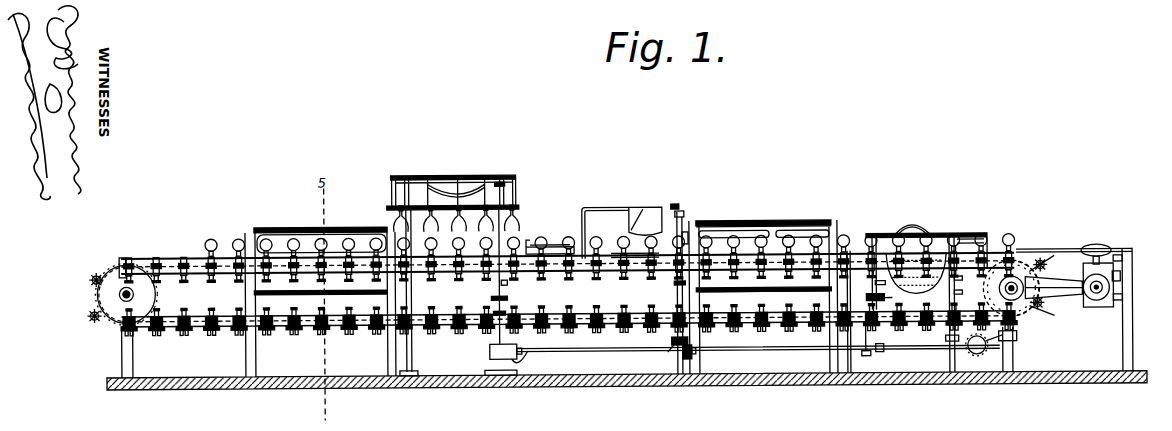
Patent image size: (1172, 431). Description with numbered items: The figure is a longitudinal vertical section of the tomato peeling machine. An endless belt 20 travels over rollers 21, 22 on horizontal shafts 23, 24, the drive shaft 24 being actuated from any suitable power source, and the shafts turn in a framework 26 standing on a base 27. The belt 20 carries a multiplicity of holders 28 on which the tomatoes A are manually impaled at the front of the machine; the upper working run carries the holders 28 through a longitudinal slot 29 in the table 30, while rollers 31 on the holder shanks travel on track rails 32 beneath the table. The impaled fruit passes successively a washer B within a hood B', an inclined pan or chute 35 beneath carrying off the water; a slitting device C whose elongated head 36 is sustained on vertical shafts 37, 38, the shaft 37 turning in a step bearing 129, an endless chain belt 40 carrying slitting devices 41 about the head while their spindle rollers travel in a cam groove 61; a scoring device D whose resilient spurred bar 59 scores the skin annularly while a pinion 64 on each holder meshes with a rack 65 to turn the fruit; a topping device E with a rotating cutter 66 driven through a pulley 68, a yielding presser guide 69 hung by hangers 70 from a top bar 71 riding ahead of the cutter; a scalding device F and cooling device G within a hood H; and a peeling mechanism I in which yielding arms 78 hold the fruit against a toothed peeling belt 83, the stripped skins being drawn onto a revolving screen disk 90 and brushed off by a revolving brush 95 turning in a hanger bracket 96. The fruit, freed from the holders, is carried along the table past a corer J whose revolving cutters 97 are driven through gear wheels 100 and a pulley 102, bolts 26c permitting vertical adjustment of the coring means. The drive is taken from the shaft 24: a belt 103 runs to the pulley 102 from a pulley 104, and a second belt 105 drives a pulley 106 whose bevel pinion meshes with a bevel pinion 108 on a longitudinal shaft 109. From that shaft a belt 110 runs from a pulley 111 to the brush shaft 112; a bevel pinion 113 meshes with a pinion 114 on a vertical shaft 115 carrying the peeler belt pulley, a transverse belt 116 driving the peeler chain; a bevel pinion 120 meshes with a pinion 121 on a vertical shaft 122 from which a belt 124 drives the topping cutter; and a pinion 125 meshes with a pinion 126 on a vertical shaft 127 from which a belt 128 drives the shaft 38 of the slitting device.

The endless belt 20 is at (198, 331).
The roller 21 is at (152, 299).
The roller 22 is at (996, 302).
The horizontal shaft 23 is at (126, 302).
The drive shaft 24 is at (1030, 294).
The framework 26 is at (122, 359).
The bolts 26c is at (1124, 264).
The base 27 is at (213, 391).
The holders 28 is at (158, 255).
The longitudinal slot 29 is at (138, 258).
The table 30 is at (1126, 255).
The rollers 31 is at (98, 276).
The track rails 32 is at (227, 276).
The inclined pan or chute 35 is at (308, 294).
The elongated head 36 is at (478, 182).
The vertical shaft 37 is at (412, 312).
The vertical shaft 38 is at (509, 286).
The endless belt 40 is at (514, 210).
The slitting devices 41 is at (430, 184).
The bar 59 is at (558, 248).
The cam groove 61 is at (500, 184).
The pinion 64 is at (92, 290).
The rack 65 is at (637, 270).
The rotating cutter 66 is at (690, 236).
The pulley 68 is at (680, 214).
The presser guide 69 is at (642, 220).
The hangers 70 is at (632, 218).
The top bar 71 is at (585, 213).
The yielding arms 78 is at (744, 296).
The peeling belt 83 is at (967, 239).
The revolving screen disk 90 is at (913, 236).
The revolving brush 95 is at (923, 291).
The hanger bracket 96 is at (876, 288).
The revolving cutters 97 is at (1107, 248).
The gear wheels 100 is at (1105, 314).
The pulley 102 is at (1086, 307).
The belt 103 is at (1053, 285).
The pulley 104 is at (1016, 329).
The second belt 105 is at (1017, 347).
The pulley 106 is at (977, 361).
The bevel pinion 108 is at (990, 368).
The longitudinal shaft 109 is at (922, 356).
The belt 110 is at (983, 300).
The pulley 111 is at (950, 358).
The shaft 112 is at (960, 286).
The bevel pinion 113 is at (863, 358).
The pinion 114 is at (880, 357).
The vertical shaft 115 is at (885, 305).
The transverse belt 116 is at (867, 302).
The bevel pinion 120 is at (680, 360).
The pinion 121 is at (668, 354).
The vertical shaft 122 is at (675, 288).
The belt 124 is at (686, 226).
The pinion 125 is at (513, 360).
The pinion 126 is at (490, 351).
The vertical shaft 127 is at (507, 316).
The belt 128 is at (491, 301).
The step bearing 129 is at (407, 391).
The tomatoes A is at (213, 240).
The washer B is at (320, 291).
The hood B' is at (351, 214).
The slitting device C is at (452, 181).
The scoring or cutting device D is at (550, 237).
The topping device E is at (635, 213).
The scalding device F is at (722, 235).
The cooling device G is at (808, 234).
The hood H is at (830, 230).
The peeling mechanism I is at (938, 239).
The corer J is at (1087, 245).